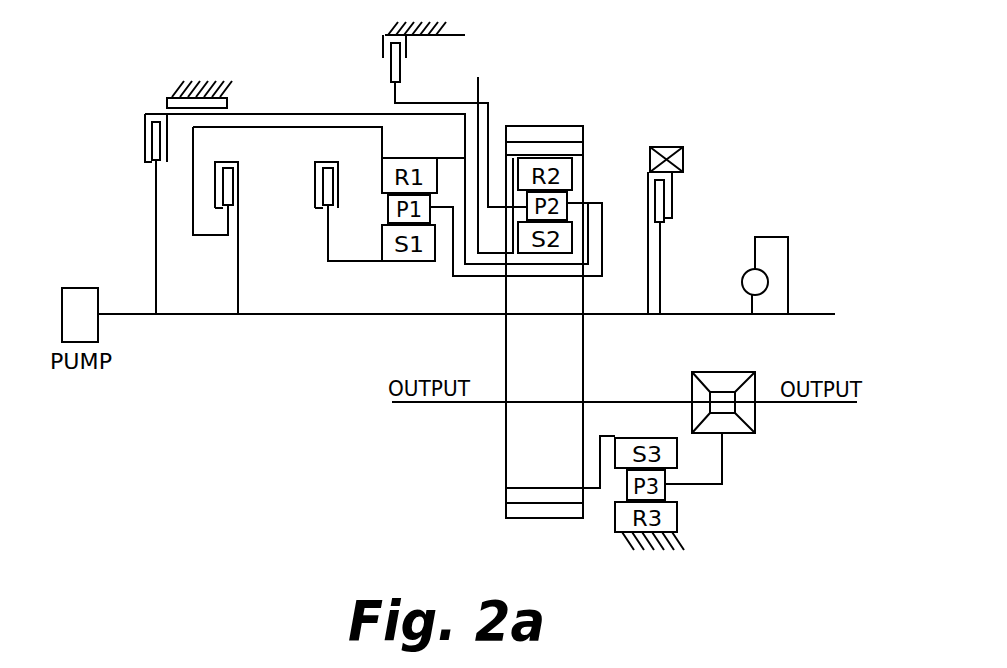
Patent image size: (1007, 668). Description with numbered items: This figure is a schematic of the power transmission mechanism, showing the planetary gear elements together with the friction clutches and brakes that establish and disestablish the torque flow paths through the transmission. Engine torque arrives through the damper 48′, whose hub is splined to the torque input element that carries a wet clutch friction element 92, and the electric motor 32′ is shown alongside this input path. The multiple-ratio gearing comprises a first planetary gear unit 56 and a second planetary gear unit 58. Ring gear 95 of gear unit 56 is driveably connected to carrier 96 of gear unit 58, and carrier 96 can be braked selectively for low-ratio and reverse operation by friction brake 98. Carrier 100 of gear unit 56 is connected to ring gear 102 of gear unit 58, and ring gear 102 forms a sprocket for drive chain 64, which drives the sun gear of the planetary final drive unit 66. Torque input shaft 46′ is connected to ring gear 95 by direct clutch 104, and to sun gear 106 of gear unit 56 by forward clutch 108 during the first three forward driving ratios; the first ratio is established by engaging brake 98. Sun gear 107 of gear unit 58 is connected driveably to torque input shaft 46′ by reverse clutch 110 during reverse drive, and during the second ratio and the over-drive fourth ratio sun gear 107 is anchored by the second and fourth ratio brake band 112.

The second and fourth ratio brake band 112 is at (167, 100).
The reverse clutch 110 is at (145, 160).
The direct clutch 104 is at (233, 183).
The forward clutch 108 is at (318, 192).
The friction brake 98 is at (403, 68).
The first planetary gear unit 56 is at (443, 166).
The ring gear 102 is at (518, 172).
The drive chain 64 is at (572, 137).
The second planetary gear unit 58 is at (587, 150).
The ring gear 95 is at (430, 158).
The carrier 100 is at (452, 263).
The sun gear 106 is at (388, 262).
The sun gear 107 is at (560, 255).
The carrier 96 is at (593, 215).
The electric motor 32′ is at (684, 175).
The wet clutch friction element 92 is at (670, 210).
The damper 48′ is at (772, 272).
The torque input shaft 46′ is at (270, 317).
The final drive gear unit 66 is at (613, 515).